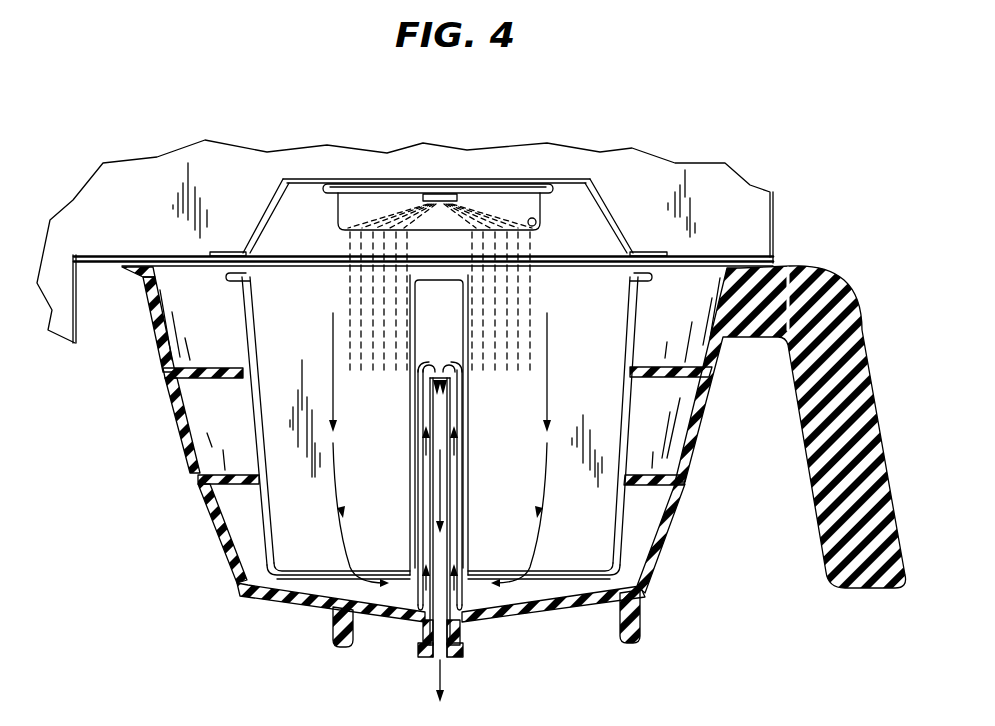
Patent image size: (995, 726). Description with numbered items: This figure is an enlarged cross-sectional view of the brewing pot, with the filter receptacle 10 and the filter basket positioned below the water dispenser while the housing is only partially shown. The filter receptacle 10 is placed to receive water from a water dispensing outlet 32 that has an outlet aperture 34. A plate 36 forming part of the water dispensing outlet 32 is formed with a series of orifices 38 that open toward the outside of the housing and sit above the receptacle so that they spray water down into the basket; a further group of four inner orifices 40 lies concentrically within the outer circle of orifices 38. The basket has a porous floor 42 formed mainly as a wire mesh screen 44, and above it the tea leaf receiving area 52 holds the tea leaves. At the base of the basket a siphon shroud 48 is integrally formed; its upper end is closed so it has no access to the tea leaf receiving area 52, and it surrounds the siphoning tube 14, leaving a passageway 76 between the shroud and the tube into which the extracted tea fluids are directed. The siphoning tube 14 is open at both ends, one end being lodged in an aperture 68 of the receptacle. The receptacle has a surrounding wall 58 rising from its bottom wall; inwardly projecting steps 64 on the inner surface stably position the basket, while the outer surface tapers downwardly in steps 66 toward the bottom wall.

The filter receptacle 10 is at (504, 472).
The siphoning tube 14 is at (450, 417).
The water dispensing outlet 32 is at (466, 230).
The outlet aperture 34 is at (433, 197).
The plate 36 is at (540, 203).
The orifices 38 is at (537, 224).
The inner orifices 40 is at (473, 193).
The porous floor 42 is at (540, 584).
The wire mesh screen 44 is at (563, 567).
The siphon shroud 48 is at (470, 457).
The tea leaf receiving area 52 is at (438, 430).
The surrounding wall 58 is at (188, 466).
The inwardly projecting steps 64 is at (197, 458).
The steps 66 is at (173, 378).
The aperture 68 is at (456, 634).
The passageway 76 is at (455, 618).